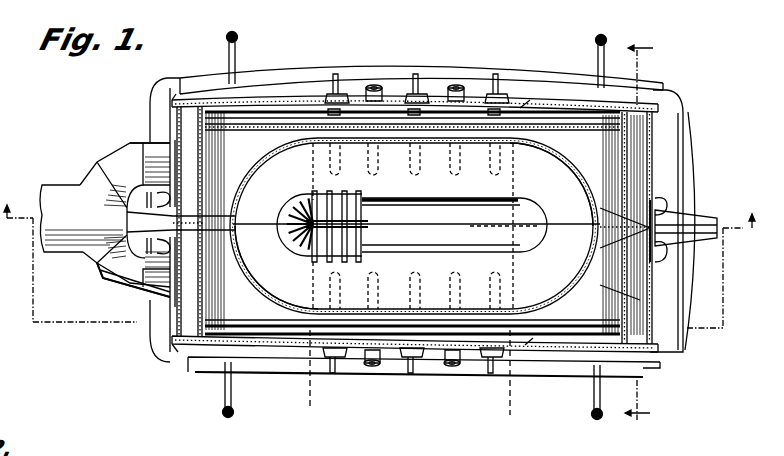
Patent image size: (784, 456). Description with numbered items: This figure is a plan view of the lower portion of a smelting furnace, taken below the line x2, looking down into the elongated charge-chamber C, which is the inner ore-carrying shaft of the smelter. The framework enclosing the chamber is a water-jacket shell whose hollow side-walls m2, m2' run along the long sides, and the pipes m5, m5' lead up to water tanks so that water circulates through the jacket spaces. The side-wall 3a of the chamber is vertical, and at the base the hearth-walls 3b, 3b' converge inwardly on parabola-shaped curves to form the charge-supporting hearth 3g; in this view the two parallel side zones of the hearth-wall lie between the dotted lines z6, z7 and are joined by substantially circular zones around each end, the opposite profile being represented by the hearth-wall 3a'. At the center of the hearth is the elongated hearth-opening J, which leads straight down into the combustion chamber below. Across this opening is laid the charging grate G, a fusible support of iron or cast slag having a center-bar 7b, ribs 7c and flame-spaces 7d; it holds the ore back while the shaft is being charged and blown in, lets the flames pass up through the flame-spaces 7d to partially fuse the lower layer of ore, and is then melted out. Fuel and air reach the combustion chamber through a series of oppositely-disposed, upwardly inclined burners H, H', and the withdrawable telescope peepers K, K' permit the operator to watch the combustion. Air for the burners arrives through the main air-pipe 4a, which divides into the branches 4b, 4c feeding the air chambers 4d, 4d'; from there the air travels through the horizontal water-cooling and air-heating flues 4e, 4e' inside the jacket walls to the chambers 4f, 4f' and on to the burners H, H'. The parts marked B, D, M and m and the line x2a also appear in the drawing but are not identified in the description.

The upper rail B is at (421, 73).
The charge-chamber C is at (414, 226).
The feed funnel D is at (116, 145).
The charging grate G is at (367, 222).
The burner H is at (417, 70).
The burner H' is at (441, 395).
The hearth-opening J is at (454, 225).
The telescope peeper K is at (413, 226).
The telescope peeper K' is at (413, 379).
The lower rail M is at (233, 285).
The frame member m is at (600, 285).
The hollow side-wall m2 is at (521, 397).
The hollow side-wall m2' is at (528, 83).
The water pipe m5 is at (417, 56).
The water pipe m5' is at (413, 404).
The side-wall of charge-chamber 3a is at (551, 184).
The hearth-wall 3a' is at (276, 267).
The hearth-wall 3b is at (441, 208).
The hearth-wall 3b' is at (441, 252).
The charge-supporting hearth 3g is at (483, 260).
The main air-pipe 4a is at (60, 195).
The air-pipe branch 4b is at (110, 292).
The air-pipe branch 4c is at (137, 140).
The air chamber 4d is at (186, 87).
The air chamber 4d' is at (160, 382).
The water-cooling and air-heating flue 4e is at (415, 85).
The water-cooling and air-heating flue 4e' is at (412, 385).
The air chamber 4f is at (659, 213).
The air chamber 4f' is at (672, 290).
The center-bar 7b is at (362, 240).
The rib 7c is at (354, 262).
The flame-space 7d is at (330, 262).
The line x² x2 is at (381, 266).
The section line x2a is at (643, 230).
The dotted line z6 is at (494, 383).
The dotted line z7 is at (310, 408).